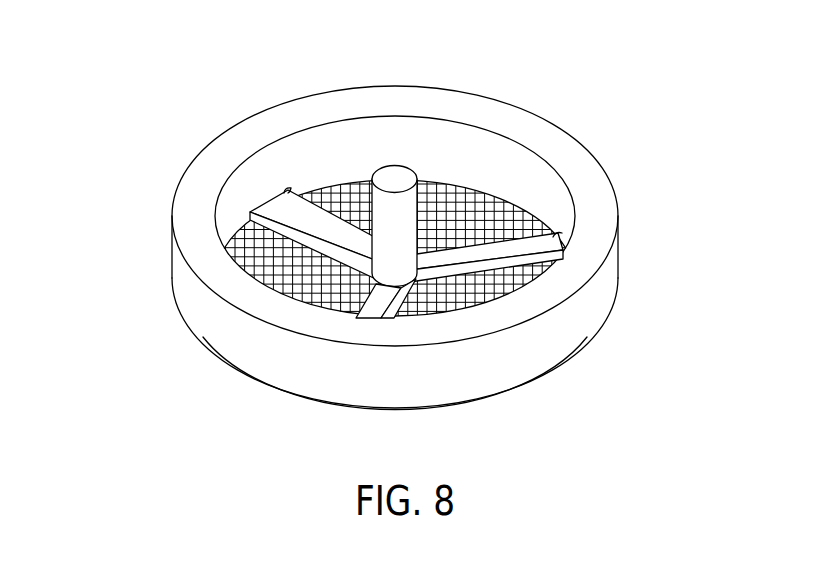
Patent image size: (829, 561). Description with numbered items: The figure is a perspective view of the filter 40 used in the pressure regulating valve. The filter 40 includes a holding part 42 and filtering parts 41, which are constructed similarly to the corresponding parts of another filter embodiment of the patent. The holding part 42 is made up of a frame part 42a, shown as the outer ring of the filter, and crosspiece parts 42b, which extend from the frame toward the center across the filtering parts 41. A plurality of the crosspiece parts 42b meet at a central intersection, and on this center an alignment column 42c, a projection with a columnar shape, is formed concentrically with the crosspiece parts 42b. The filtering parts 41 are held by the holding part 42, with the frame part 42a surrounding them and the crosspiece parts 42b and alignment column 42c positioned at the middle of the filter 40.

The filter 40 is at (400, 212).
The filtering parts 41 is at (345, 197).
The holding part 42 is at (372, 248).
The frame part 42a is at (210, 321).
The crosspiece parts 42b is at (283, 207).
The alignment column 42c is at (396, 178).